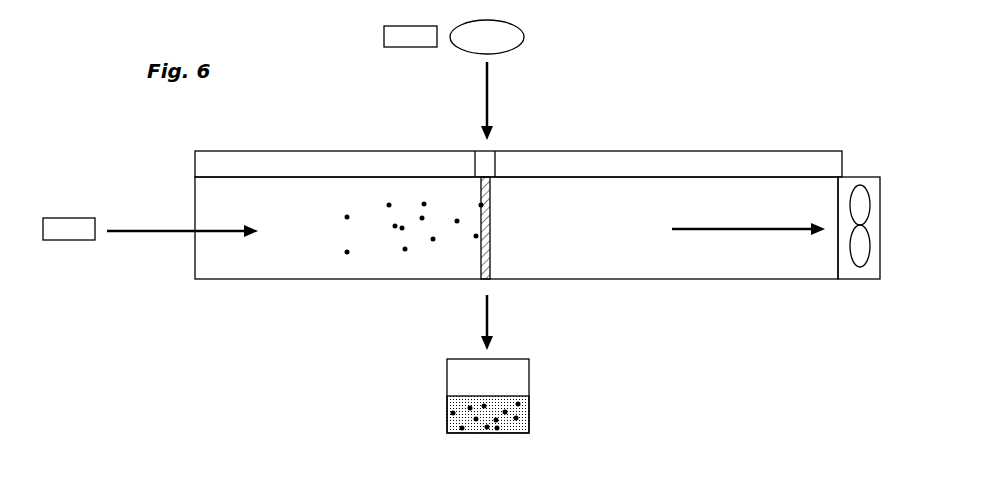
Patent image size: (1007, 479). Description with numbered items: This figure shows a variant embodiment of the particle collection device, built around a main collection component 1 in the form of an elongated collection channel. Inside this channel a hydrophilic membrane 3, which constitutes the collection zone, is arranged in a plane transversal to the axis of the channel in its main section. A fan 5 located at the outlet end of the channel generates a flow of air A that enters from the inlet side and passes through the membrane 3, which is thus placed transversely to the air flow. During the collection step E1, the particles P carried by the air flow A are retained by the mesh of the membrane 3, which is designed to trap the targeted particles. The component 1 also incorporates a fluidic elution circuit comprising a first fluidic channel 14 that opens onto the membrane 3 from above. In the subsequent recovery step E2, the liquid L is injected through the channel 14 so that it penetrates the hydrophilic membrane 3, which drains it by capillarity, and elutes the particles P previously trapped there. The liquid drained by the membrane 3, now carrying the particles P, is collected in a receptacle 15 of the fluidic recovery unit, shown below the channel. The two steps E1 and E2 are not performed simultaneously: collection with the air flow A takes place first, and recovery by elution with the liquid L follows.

The main collection component 1 is at (658, 151).
The first fluidic channel 14 is at (485, 164).
The membrane 3 is at (482, 249).
The fan 5 is at (862, 200).
The particles P is at (347, 217).
The receptacle 15 is at (529, 377).
The air flow A is at (182, 225).
The liquid L is at (487, 80).
The collection step E1 is at (69, 229).
The recovery step by elution E2 is at (410, 36).